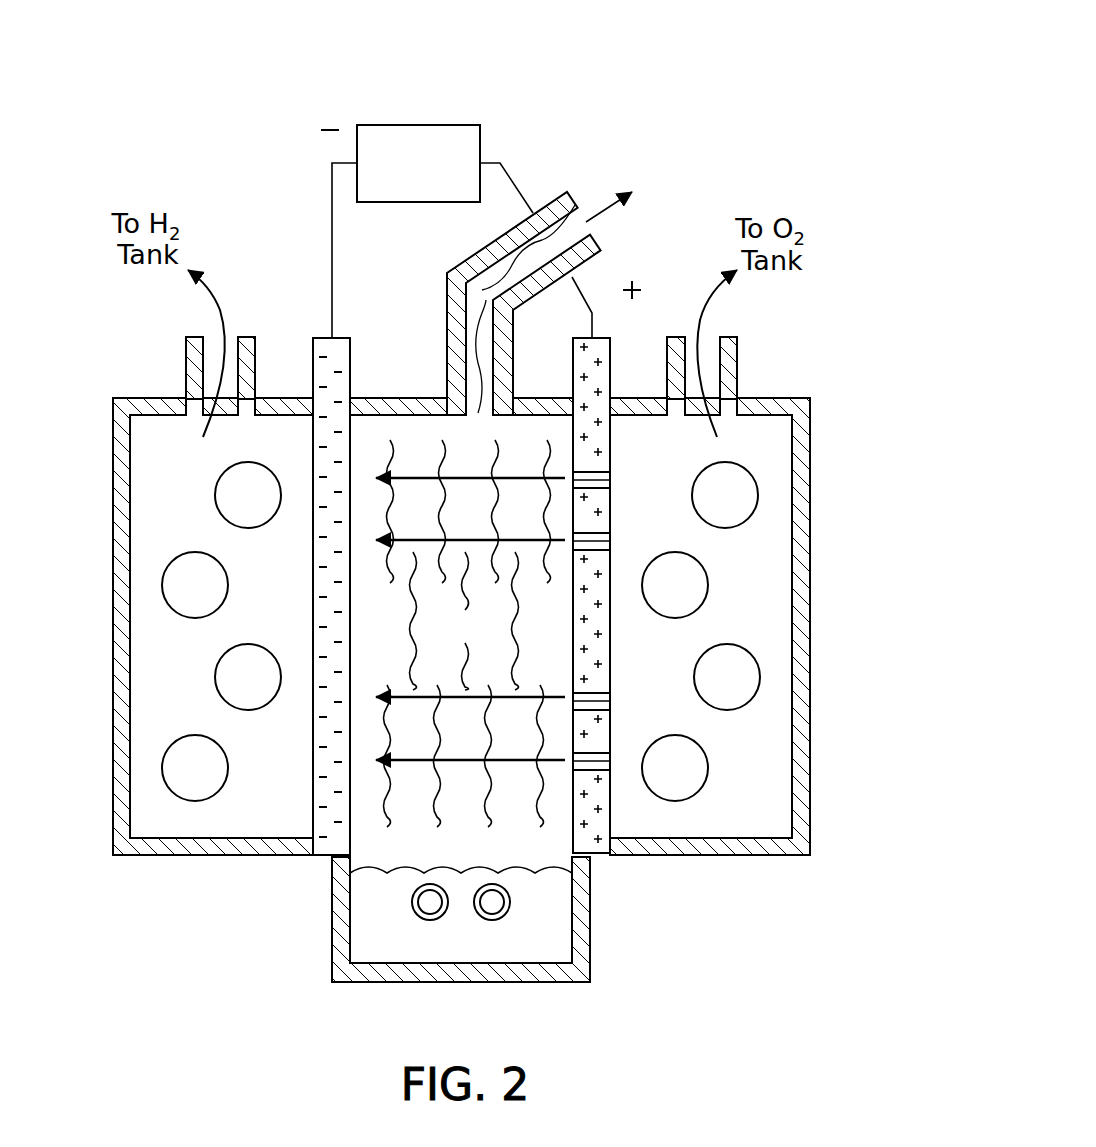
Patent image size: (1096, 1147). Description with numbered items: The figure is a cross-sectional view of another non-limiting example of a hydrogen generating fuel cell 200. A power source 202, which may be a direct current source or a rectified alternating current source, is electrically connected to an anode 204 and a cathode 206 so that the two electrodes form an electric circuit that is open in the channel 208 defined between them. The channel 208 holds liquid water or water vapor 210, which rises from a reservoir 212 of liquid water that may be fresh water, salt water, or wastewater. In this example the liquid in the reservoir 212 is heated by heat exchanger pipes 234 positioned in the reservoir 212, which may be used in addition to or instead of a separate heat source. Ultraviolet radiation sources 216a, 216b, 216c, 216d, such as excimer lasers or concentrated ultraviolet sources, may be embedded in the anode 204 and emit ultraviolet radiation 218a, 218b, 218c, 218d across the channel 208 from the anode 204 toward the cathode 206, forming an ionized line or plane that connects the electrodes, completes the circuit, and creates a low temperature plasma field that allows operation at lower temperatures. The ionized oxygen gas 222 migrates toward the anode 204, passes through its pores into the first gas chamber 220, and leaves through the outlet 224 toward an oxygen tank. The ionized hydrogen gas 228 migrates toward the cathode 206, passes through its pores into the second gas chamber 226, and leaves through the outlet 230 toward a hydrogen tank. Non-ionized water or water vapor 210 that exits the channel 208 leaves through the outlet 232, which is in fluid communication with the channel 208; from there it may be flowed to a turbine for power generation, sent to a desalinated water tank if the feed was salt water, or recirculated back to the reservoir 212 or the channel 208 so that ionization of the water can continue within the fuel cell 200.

The hydrogen generating fuel cell 200 is at (872, 321).
The power source 202 is at (408, 124).
The anode 204 is at (612, 346).
The cathode 206 is at (313, 348).
The channel 208 is at (443, 643).
The water/water vapor 210 is at (528, 440).
The reservoir 212 is at (436, 955).
The ultraviolet radiation source 216a is at (603, 480).
The ultraviolet radiation source 216b is at (603, 540).
The ultraviolet radiation source 216c is at (603, 700).
The ultraviolet radiation source 216d is at (603, 760).
The ultraviolet radiation 218a is at (418, 477).
The ultraviolet radiation 218b is at (402, 537).
The ultraviolet radiation 218c is at (395, 697).
The ultraviolet radiation 218d is at (410, 760).
The first gas chamber 220 is at (633, 677).
The oxygen gas 222 is at (758, 495).
The outlet 224 is at (733, 340).
The second gas chamber 226 is at (153, 677).
The hydrogen gas 228 is at (162, 578).
The outlet 230 is at (186, 338).
The outlet 232 is at (598, 200).
The heat exchanger pipes 234 is at (508, 908).